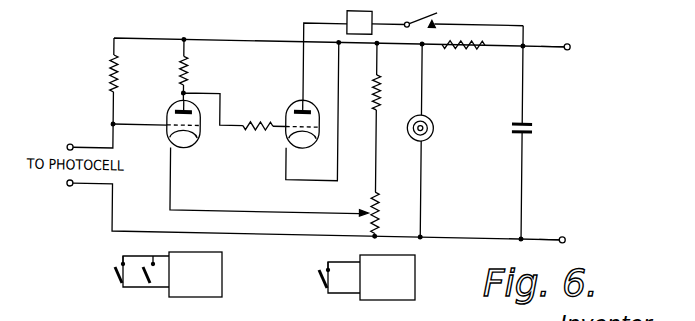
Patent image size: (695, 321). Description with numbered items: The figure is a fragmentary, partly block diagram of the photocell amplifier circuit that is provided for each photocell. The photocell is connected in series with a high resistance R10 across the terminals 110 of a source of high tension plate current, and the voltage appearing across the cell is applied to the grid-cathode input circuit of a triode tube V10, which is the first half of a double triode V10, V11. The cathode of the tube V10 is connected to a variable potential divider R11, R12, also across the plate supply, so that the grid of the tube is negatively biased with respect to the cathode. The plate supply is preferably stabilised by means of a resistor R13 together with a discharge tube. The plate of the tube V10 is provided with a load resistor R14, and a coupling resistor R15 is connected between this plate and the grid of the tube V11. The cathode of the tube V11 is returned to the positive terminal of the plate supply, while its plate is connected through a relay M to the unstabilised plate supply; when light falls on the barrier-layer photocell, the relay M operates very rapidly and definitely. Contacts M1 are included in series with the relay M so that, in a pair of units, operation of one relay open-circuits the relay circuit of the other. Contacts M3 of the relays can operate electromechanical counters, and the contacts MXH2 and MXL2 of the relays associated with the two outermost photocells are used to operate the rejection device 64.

The high resistance R10 is at (117, 95).
The load resistor R14 is at (189, 85).
The coupling resistor R15 is at (262, 110).
The triode tube V10 is at (203, 140).
The triode tube V11 is at (285, 129).
The variable potential divider R11 is at (396, 77).
The variable potential divider R12 is at (372, 200).
The resistor R13 is at (462, 51).
The relay M is at (348, 12).
The contacts M1 is at (436, 13).
The terminals 110 is at (567, 143).
The rejection device 64 is at (220, 268).
The contacts MXL2 is at (116, 276).
The contacts MXH2 is at (153, 272).
The contacts M3 is at (318, 286).